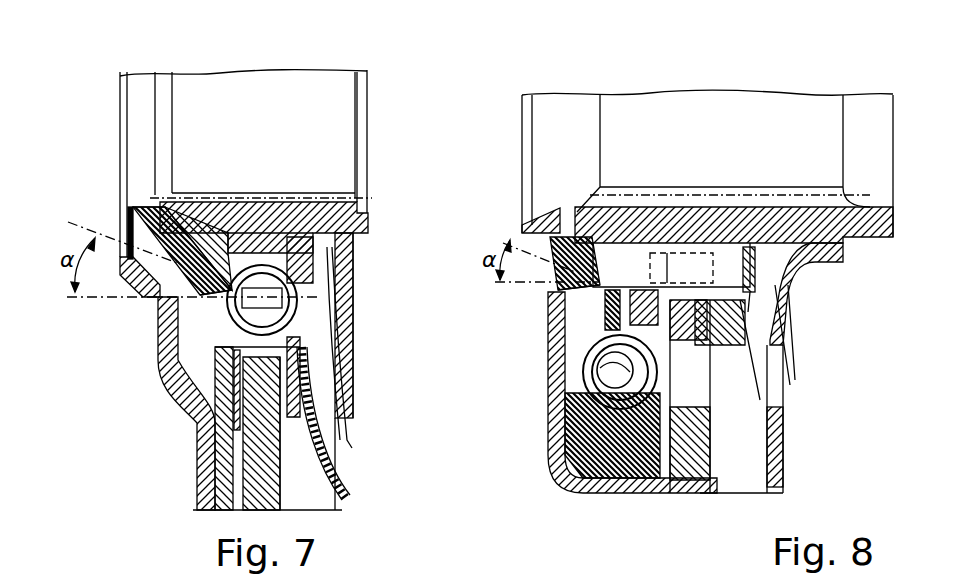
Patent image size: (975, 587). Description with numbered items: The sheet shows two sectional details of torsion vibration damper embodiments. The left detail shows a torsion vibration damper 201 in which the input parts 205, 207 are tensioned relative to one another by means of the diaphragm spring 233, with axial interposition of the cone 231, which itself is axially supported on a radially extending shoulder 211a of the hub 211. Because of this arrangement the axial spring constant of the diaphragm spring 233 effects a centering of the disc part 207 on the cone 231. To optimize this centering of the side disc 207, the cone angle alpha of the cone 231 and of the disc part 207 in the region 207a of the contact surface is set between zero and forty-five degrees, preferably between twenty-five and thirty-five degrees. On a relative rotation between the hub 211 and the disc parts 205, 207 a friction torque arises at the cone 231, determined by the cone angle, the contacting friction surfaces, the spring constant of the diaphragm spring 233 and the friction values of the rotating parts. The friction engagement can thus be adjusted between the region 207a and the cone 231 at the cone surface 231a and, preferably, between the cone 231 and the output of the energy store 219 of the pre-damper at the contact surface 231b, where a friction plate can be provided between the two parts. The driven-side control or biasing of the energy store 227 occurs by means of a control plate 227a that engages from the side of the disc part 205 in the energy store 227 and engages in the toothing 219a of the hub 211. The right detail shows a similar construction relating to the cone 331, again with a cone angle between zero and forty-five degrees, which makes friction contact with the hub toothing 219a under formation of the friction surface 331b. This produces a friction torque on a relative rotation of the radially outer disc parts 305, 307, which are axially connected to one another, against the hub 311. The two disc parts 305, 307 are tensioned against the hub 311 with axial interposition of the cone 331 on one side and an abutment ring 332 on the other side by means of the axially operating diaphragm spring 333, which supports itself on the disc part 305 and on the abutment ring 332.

In FIG. 7, the torsion vibration damper 201 is at (297, 62).
In FIG. 7, the input part 205 is at (352, 268).
In FIG. 7, the disc part 207 is at (175, 393).
In FIG. 7, the region of the contact surface 207a is at (143, 273).
In FIG. 7, the hub 211 is at (365, 221).
In FIG. 7, the radially extending shoulder 211a is at (233, 235).
In FIG. 7, the energy store of the pre-damper 219 is at (262, 250).
In FIG. 7, the toothing 219a is at (262, 287).
In FIG. 8, the toothing 219a is at (633, 267).
In FIG. 7, the energy store 227 is at (282, 322).
In FIG. 7, the control plate 227a is at (233, 347).
In FIG. 7, the cone 231 is at (125, 235).
In FIG. 7, the cone surface 231a is at (123, 250).
In FIG. 7, the contact surface 231b is at (143, 295).
In FIG. 7, the diaphragm spring 233 is at (330, 290).
In FIG. 8, the radially outer disc part 305 is at (783, 442).
In FIG. 8, the radially outer disc part 307 is at (550, 427).
In FIG. 8, the hub 311 is at (863, 223).
In FIG. 8, the cone 331 is at (570, 237).
In FIG. 8, the friction surface 331b is at (572, 293).
In FIG. 8, the abutment ring 332 is at (763, 252).
In FIG. 8, the diaphragm spring 333 is at (788, 310).